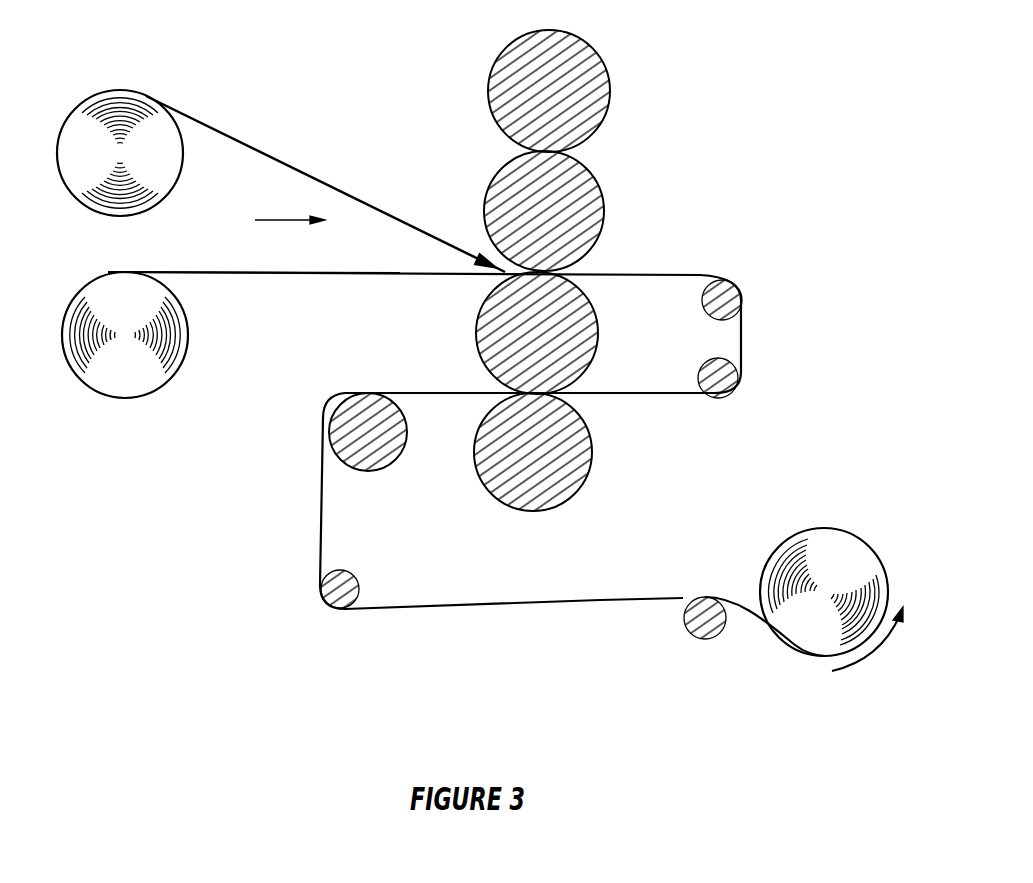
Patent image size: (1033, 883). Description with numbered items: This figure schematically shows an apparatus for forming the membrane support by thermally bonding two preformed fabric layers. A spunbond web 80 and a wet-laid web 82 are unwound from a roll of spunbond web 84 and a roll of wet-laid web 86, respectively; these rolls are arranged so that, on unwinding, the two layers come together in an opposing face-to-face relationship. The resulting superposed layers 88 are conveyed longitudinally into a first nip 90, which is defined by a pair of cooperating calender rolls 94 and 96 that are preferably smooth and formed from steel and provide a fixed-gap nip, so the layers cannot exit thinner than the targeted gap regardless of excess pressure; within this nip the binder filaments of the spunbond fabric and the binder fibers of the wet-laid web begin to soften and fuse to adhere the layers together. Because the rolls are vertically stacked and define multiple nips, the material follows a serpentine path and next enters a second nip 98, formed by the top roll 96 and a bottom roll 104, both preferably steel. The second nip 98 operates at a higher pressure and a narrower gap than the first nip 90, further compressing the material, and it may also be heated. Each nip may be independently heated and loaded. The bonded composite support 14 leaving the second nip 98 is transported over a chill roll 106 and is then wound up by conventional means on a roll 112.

The composite support 14 is at (700, 275).
The spunbond web 80 is at (228, 130).
The wet-laid web 82 is at (220, 276).
The roll of spunbond web 84 is at (127, 108).
The roll of wet-laid web 86 is at (115, 390).
The superposed layers 88 is at (510, 272).
The first nip 90 is at (606, 212).
The calender roll 94 is at (595, 185).
The calender roll 96 is at (560, 332).
The second nip 98 is at (581, 452).
The bottom roll 104 is at (558, 478).
The chill roll 106 is at (380, 470).
The roll 112 is at (815, 530).